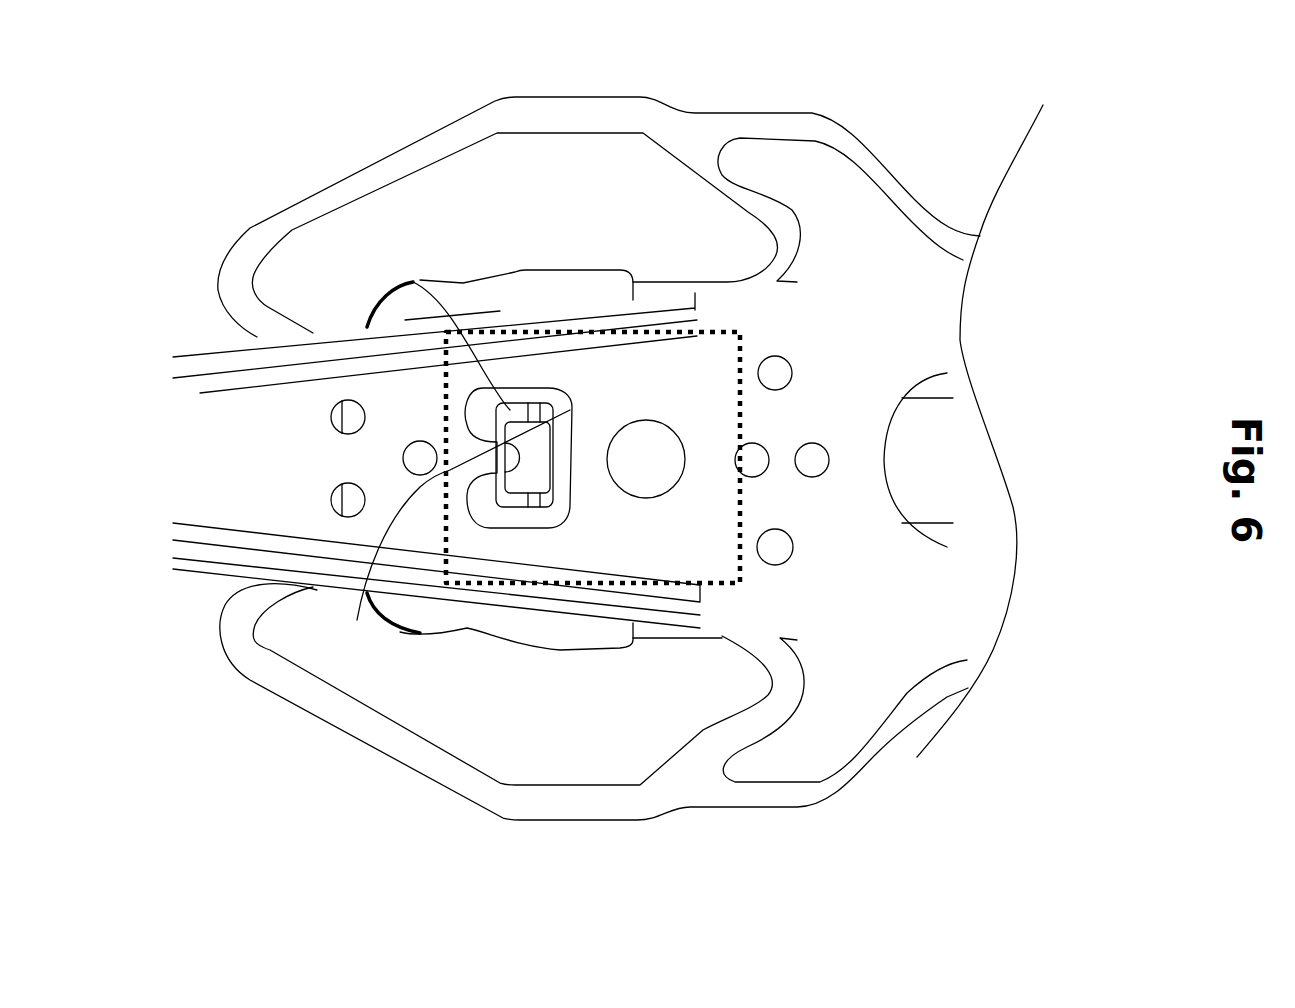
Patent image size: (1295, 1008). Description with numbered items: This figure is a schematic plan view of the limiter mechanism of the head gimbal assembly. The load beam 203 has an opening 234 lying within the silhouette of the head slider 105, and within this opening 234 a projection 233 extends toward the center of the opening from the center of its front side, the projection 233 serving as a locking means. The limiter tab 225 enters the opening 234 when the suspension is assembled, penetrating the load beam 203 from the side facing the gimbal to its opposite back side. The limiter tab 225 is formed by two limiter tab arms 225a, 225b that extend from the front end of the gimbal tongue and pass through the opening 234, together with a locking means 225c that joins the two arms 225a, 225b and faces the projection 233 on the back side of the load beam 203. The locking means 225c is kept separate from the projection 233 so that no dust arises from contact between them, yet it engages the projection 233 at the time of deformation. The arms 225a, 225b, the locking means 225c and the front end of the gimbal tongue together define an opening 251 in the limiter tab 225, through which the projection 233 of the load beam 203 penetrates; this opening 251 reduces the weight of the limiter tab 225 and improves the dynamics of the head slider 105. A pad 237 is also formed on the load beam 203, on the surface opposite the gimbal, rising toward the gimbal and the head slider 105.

The head slider 105 is at (747, 512).
The load beam 203 is at (192, 357).
The limiter tab 225 is at (515, 485).
The limiter tab arm 225a is at (497, 530).
The limiter tab arm 225b is at (413, 282).
The locking means 225c is at (357, 620).
The projection 233 is at (570, 412).
The opening 234 is at (524, 510).
The pad 237 is at (664, 420).
The opening 251 is at (539, 510).